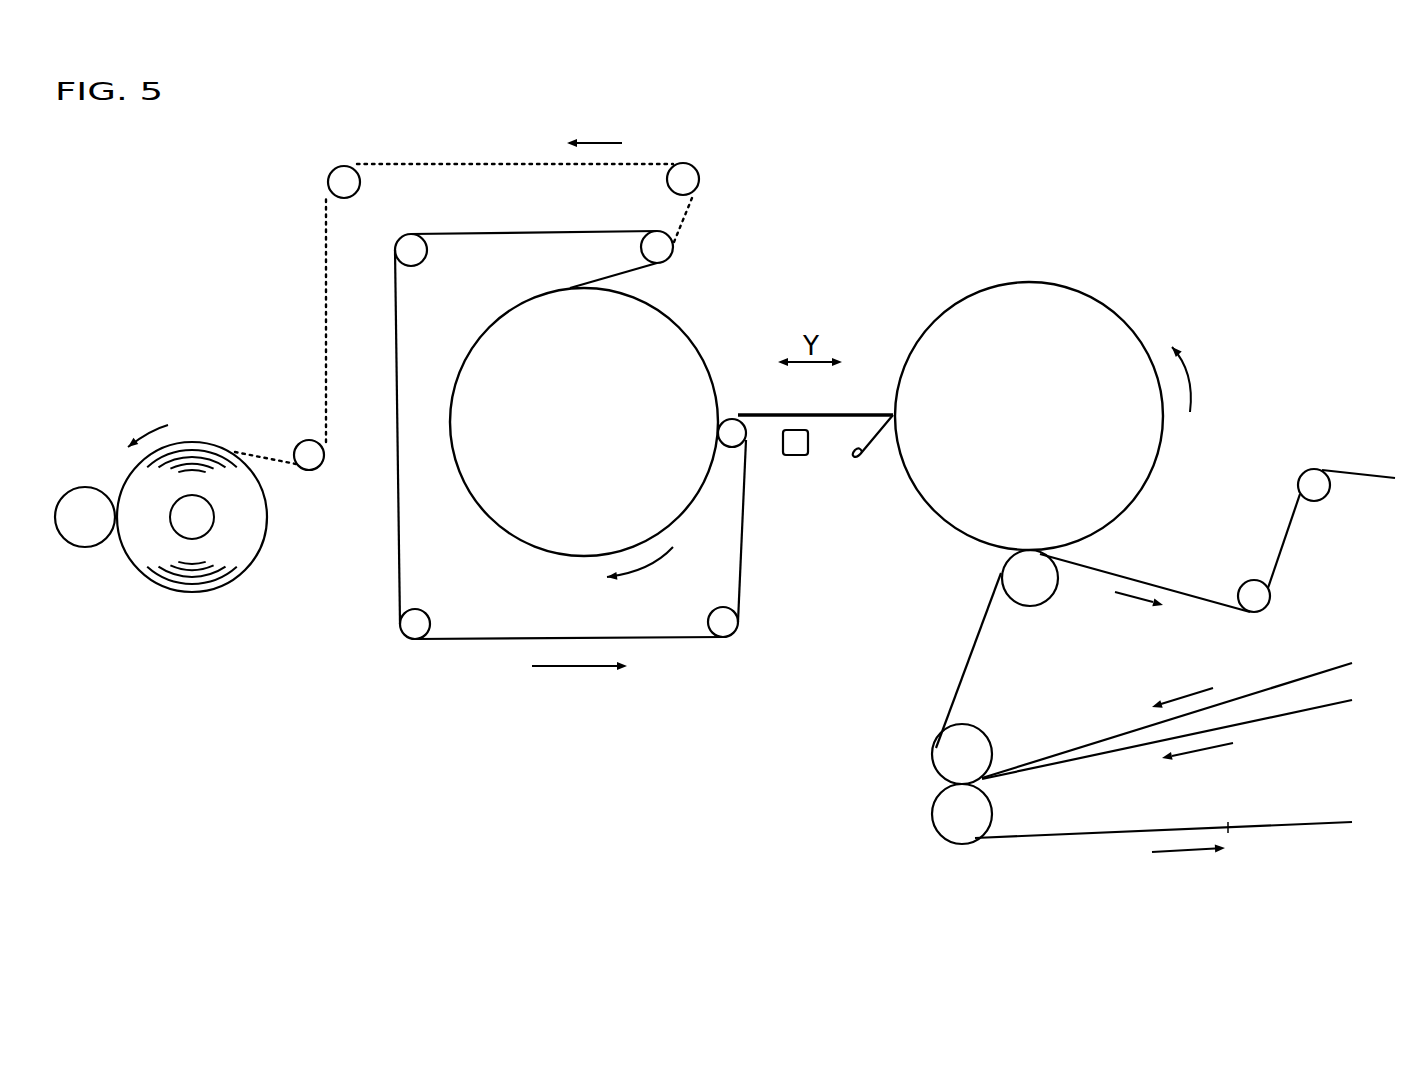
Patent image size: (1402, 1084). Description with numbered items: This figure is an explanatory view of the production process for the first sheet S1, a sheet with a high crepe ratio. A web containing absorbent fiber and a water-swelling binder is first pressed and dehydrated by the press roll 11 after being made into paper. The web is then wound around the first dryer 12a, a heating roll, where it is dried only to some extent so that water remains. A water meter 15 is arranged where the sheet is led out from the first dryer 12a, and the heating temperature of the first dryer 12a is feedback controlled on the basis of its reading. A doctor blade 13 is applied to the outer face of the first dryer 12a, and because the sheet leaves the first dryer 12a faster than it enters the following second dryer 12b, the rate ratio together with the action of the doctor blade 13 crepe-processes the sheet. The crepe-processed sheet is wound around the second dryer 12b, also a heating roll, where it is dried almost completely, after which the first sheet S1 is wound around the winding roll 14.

The press roll 11 is at (942, 758).
The first dryer 12a is at (1093, 322).
The second dryer 12b is at (653, 335).
The doctor blade 13 is at (883, 435).
The winding roll 14 is at (192, 528).
The water meter 15 is at (792, 457).
The first sheet S1 is at (320, 320).